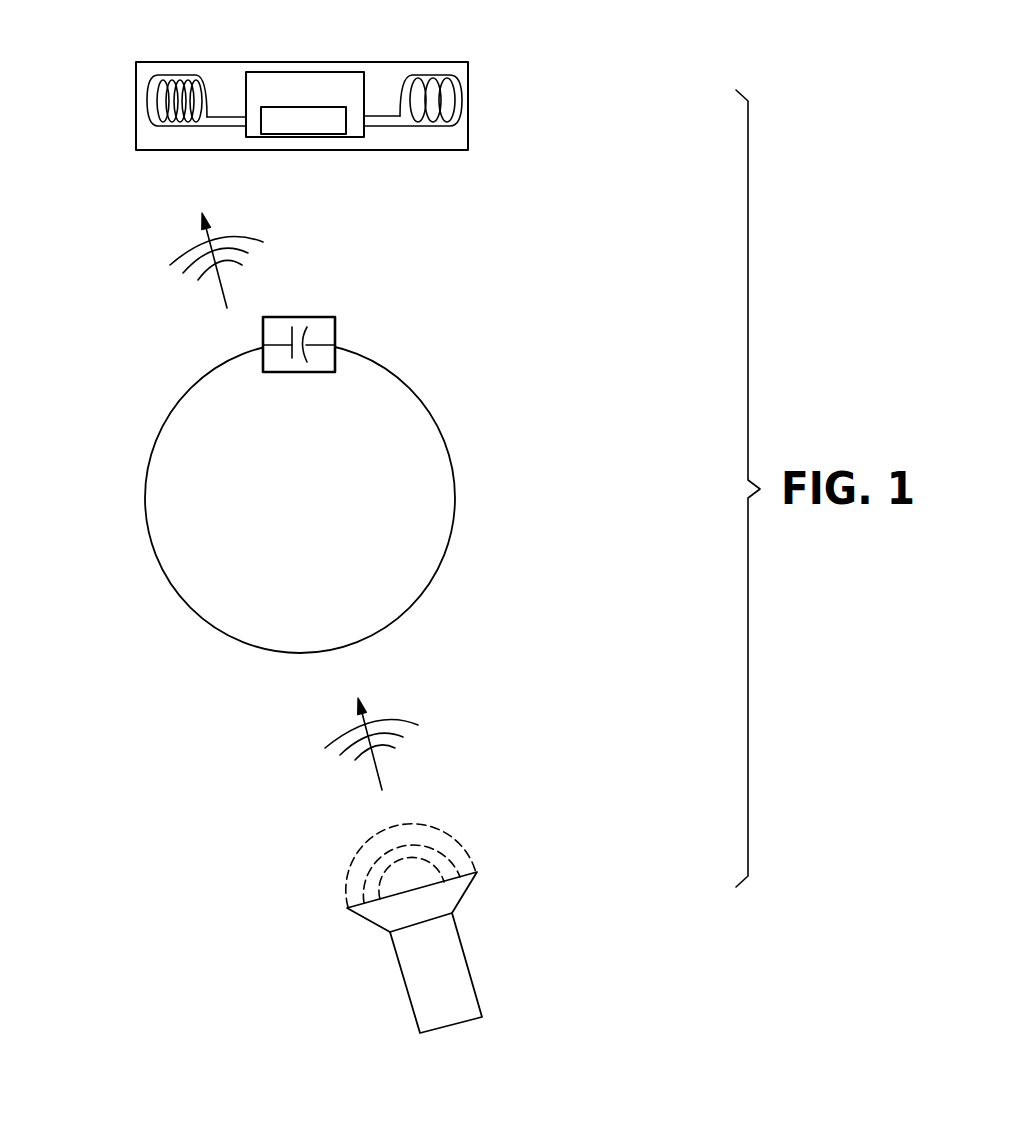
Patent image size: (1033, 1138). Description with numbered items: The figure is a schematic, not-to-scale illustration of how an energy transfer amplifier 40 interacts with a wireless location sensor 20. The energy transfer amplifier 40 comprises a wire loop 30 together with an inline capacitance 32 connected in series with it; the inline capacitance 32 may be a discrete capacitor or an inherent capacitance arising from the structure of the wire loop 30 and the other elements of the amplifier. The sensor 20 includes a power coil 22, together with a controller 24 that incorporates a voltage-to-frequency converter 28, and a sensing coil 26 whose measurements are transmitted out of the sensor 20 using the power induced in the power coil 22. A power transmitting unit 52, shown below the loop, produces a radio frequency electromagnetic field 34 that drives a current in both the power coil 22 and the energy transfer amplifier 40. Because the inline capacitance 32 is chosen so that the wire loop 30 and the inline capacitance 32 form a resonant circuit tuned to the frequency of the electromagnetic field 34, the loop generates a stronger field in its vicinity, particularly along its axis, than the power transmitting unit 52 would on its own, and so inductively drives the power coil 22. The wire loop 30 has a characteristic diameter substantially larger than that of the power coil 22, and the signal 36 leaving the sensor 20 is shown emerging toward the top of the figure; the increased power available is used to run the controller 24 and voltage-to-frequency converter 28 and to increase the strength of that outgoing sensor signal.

The sensor 20 is at (300, 62).
The power coil 22 is at (147, 108).
The controller 24 is at (253, 137).
The sensing coil 26 is at (468, 95).
The voltage-to-frequency converter 28 is at (343, 134).
The wire loop 30 is at (407, 385).
The inline capacitance 32 is at (335, 328).
The radio frequency electromagnetic field 34 is at (398, 745).
The transmitted signal 36 is at (243, 259).
The energy transfer amplifier 40 is at (96, 621).
The power transmitting unit 52 is at (392, 955).